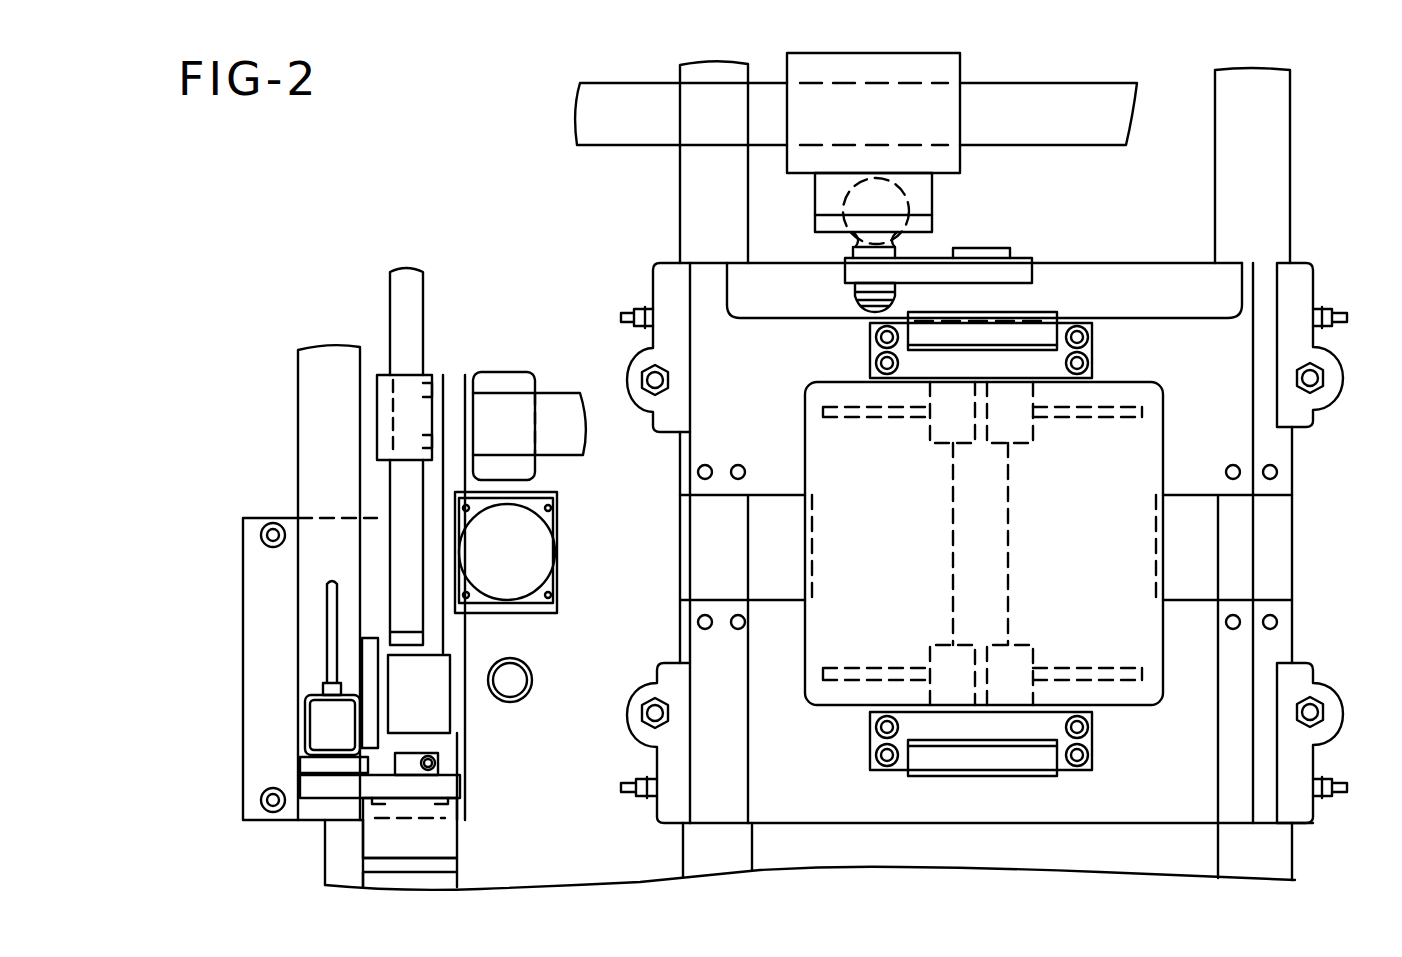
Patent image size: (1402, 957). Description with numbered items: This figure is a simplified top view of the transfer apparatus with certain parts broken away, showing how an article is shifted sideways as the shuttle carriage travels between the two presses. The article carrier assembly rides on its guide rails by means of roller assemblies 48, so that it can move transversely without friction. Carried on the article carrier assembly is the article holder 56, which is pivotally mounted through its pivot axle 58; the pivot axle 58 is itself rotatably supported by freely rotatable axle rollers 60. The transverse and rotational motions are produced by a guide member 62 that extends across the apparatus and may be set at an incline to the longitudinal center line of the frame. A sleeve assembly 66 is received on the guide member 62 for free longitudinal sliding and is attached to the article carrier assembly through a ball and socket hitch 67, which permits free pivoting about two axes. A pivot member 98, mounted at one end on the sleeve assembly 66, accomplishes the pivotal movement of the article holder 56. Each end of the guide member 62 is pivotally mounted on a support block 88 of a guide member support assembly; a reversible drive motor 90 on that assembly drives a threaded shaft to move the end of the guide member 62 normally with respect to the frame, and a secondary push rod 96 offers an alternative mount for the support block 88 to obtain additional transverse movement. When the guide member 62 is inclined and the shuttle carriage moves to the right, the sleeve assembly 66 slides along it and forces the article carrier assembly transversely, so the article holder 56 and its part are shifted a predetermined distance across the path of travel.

The roller assemblies 48 is at (1303, 276).
The article holder 56 is at (1009, 535).
The pivot axle 58 is at (1010, 520).
The axle rollers 60 is at (1093, 351).
The guide member 62 is at (1095, 92).
The sleeve assembly 66 is at (942, 55).
The ball and socket hitch 67 is at (855, 243).
The support block 88 is at (530, 372).
The reversible drive motor 90 is at (546, 553).
The secondary push rod 96 is at (533, 672).
The pivot member 98 is at (1025, 278).